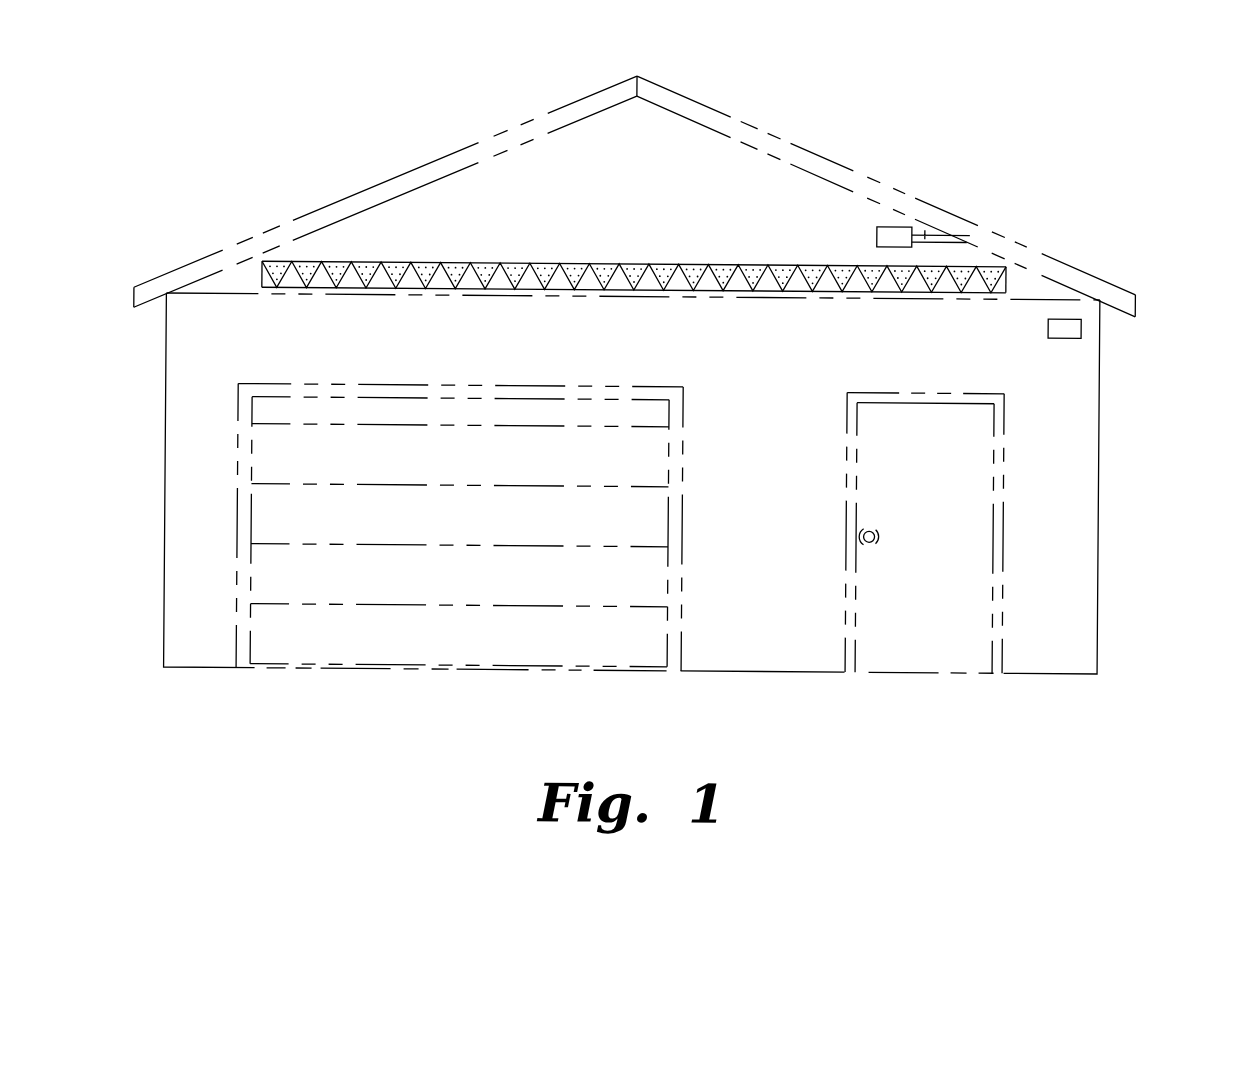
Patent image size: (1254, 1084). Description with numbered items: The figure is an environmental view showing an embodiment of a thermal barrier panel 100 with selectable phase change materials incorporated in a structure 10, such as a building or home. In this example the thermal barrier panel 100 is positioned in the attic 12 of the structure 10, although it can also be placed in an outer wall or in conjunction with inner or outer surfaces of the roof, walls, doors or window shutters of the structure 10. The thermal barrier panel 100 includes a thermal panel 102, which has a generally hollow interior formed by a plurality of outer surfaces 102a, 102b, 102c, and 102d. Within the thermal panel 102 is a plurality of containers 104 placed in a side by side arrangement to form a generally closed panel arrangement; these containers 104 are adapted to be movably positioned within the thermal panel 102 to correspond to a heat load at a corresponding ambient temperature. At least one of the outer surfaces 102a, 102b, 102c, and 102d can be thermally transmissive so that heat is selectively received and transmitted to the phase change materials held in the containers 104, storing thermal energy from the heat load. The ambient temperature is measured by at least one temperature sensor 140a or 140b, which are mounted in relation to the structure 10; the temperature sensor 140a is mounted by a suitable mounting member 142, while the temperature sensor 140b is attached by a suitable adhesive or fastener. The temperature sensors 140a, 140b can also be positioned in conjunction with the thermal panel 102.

The structure 10 is at (1127, 513).
The attic 12 is at (625, 140).
The thermal barrier panel 100 is at (605, 253).
The thermal panel 102 is at (605, 253).
The outer surface 102a is at (365, 264).
The outer surface 102b is at (732, 290).
The outer surface 102c is at (1004, 277).
The outer surface 102d is at (189, 278).
The containers 104 is at (308, 264).
The temperature sensor 140a is at (888, 225).
The temperature sensor 140b is at (1072, 324).
The mounting member 142 is at (923, 233).